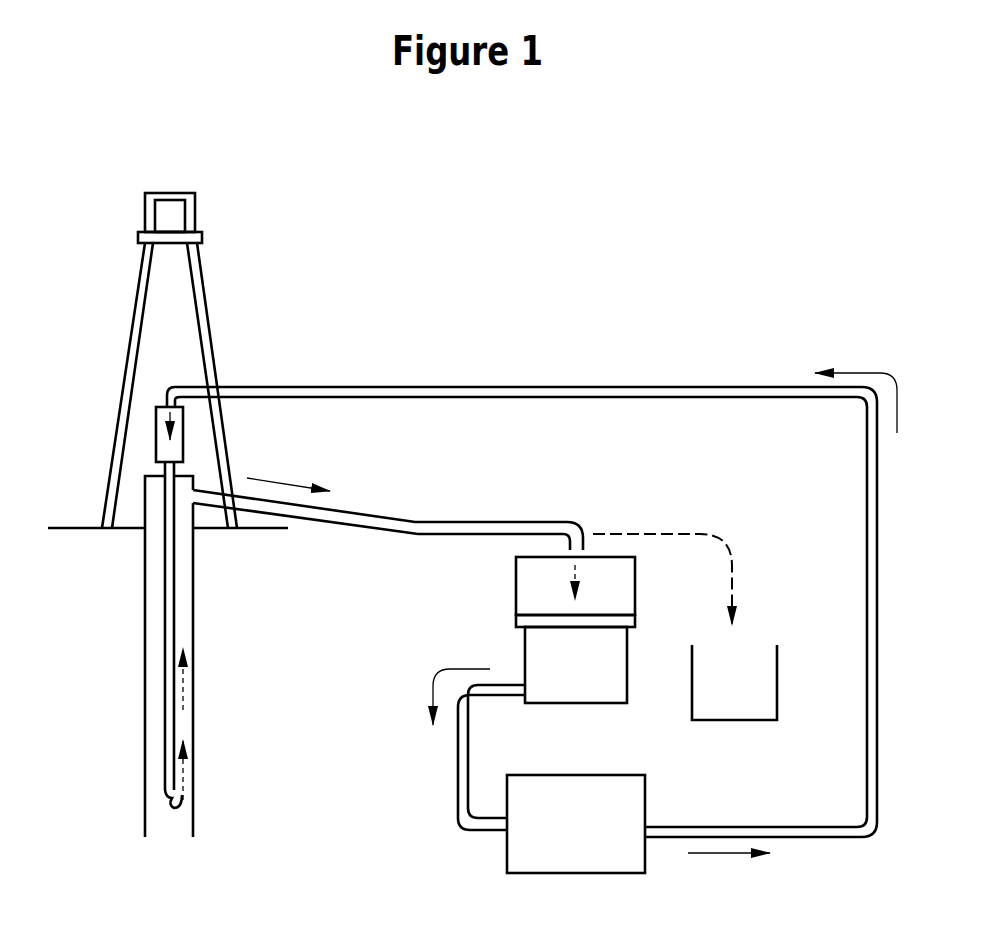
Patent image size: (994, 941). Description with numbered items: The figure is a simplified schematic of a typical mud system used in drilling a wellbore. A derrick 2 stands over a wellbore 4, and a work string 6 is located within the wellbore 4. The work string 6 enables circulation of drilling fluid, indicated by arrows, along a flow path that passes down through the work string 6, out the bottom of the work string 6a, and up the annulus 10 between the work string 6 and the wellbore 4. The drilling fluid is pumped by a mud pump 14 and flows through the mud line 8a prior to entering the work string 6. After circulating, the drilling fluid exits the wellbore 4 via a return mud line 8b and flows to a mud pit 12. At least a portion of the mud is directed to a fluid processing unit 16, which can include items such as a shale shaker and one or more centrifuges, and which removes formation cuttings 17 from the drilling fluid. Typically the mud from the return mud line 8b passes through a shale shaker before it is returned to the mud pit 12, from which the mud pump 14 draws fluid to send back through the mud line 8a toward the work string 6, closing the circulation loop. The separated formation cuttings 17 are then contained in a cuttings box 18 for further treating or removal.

The derrick 2 is at (206, 290).
The wellbore 4 is at (193, 707).
The work string 6 is at (177, 595).
The bottom of the work string 6a is at (163, 790).
The mud line 8a is at (246, 387).
The return mud line 8b is at (323, 523).
The annulus 10 is at (183, 775).
The mud pit 12 is at (523, 655).
The mud pump 14 is at (563, 867).
The fluid processing unit 16 is at (510, 587).
The formation cuttings 17 is at (702, 517).
The cuttings box 18 is at (790, 647).